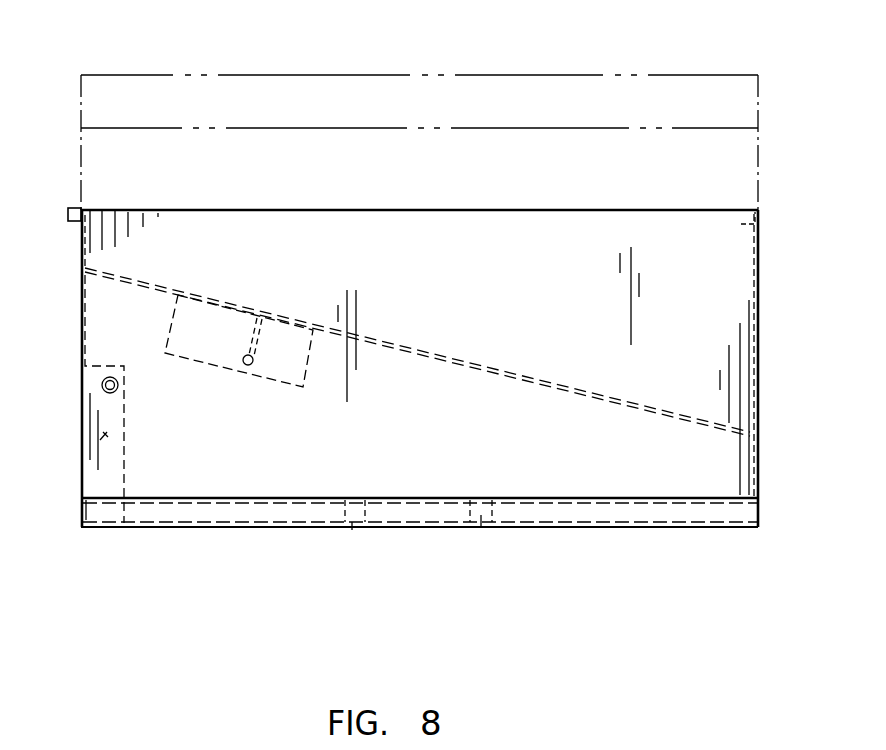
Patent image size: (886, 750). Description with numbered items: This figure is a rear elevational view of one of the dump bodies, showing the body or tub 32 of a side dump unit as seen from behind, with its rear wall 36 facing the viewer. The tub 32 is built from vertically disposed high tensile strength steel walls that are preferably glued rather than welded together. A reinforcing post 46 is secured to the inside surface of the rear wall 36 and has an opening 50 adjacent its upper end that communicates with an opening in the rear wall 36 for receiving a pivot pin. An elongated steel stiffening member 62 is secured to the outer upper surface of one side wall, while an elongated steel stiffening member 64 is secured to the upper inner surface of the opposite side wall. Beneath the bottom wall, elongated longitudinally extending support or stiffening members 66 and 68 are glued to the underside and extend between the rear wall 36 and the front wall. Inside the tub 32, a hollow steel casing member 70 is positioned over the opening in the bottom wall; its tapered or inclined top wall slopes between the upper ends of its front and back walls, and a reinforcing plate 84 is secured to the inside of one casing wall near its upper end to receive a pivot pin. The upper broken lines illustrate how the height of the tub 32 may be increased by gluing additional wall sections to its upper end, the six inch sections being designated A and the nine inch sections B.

The six inch wall section A is at (81, 93).
The nine inch wall section B is at (81, 175).
The body or tub 32 is at (768, 334).
The rear wall 36 is at (558, 288).
The reinforcing post 46 is at (107, 435).
The opening 50 is at (102, 383).
The stiffening member 62 is at (70, 222).
The stiffening member 64 is at (752, 224).
The support member 66 is at (352, 520).
The support member 68 is at (480, 528).
The casing member 70 is at (499, 372).
The reinforcing plate 84 is at (305, 376).